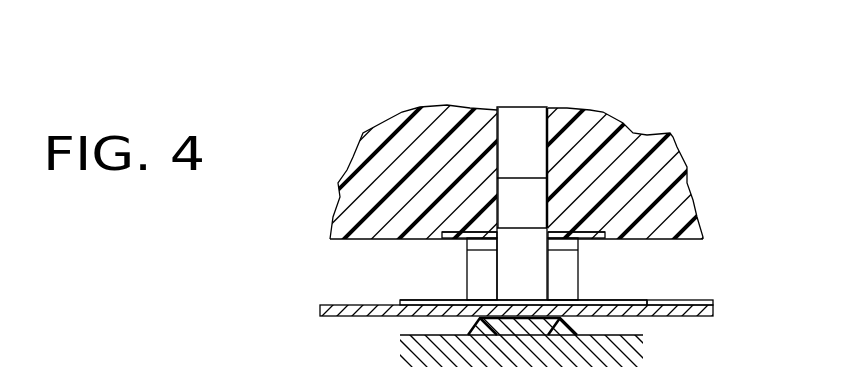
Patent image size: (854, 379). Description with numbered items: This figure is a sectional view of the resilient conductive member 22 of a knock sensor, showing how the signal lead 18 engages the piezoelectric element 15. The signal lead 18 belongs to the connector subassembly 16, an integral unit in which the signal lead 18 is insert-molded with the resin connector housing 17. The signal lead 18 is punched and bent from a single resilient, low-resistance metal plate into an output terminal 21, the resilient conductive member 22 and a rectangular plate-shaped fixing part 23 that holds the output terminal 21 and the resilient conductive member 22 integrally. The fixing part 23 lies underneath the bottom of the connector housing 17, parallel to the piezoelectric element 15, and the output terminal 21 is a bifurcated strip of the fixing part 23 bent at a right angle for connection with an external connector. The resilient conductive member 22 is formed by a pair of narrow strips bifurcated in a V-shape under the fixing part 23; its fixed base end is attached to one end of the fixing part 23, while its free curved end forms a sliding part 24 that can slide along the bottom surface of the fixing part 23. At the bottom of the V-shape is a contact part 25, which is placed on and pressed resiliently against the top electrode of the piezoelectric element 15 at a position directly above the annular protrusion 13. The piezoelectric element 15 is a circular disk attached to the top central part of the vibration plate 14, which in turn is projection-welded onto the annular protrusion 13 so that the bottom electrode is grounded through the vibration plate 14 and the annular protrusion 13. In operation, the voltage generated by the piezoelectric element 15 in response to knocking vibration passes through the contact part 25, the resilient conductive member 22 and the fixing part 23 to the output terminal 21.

The annular protrusion 13 is at (574, 327).
The vibration plate 14 is at (710, 301).
The piezoelectric element 15 is at (647, 298).
The connector subassembly 16 is at (670, 48).
The connector housing 17 is at (673, 143).
The signal lead 18 is at (510, 103).
The output terminal 21 is at (532, 125).
The resilient conductive member 22 is at (467, 273).
The fixing part 23 is at (460, 233).
The sliding part 24 is at (473, 255).
The contact part 25 is at (440, 298).